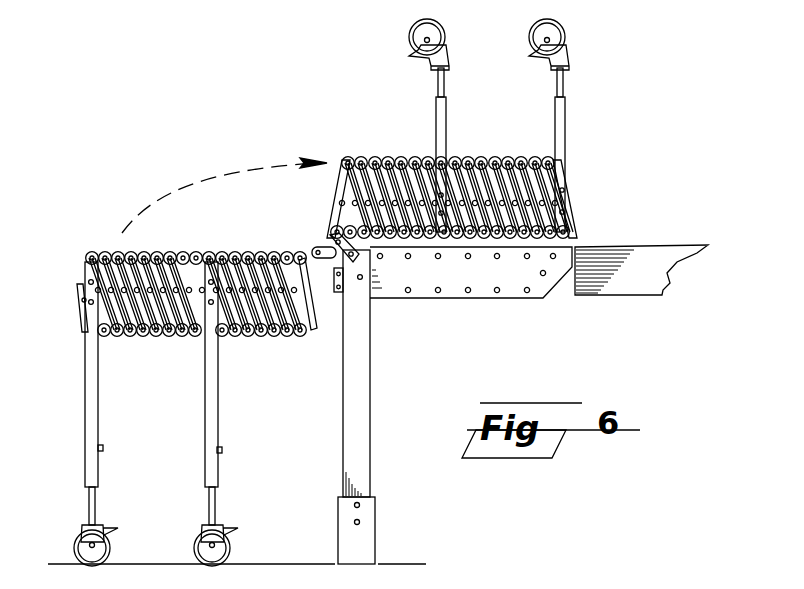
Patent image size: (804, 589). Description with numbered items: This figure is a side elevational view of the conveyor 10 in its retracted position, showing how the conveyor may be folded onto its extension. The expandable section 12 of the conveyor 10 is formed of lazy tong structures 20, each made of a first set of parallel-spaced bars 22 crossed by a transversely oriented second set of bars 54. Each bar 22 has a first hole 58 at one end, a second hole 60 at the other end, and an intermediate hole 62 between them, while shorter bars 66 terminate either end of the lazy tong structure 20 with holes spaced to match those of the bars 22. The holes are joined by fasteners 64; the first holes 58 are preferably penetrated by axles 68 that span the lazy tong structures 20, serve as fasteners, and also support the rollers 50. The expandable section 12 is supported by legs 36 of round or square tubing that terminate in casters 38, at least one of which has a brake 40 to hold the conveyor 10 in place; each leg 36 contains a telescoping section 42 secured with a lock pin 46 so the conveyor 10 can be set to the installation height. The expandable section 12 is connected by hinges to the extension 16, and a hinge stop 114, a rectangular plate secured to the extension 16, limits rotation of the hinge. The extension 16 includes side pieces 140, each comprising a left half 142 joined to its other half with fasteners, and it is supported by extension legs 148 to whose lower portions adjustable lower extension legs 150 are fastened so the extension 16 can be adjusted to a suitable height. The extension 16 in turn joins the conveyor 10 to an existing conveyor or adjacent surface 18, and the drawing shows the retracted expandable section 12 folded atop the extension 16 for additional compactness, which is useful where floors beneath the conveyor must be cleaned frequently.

The conveyor 10 is at (164, 337).
The expandable section 12 is at (128, 342).
The extension 16 is at (450, 302).
The existing conveyor or adjacent surface 18 is at (620, 298).
The lazy tong structure 20 is at (233, 334).
The bars 22 is at (270, 334).
The legs 36 is at (217, 398).
The casters 38 is at (229, 550).
The brake 40 is at (230, 530).
The telescoping section 42 is at (214, 502).
The lock pin 46 is at (222, 451).
The rollers 50 is at (225, 250).
The second set of bars 54 is at (178, 338).
The first hole 58 is at (182, 252).
The second hole 60 is at (109, 338).
The intermediate hole 62 is at (85, 278).
The fastener 64 is at (153, 338).
The shorter bars 66 is at (82, 292).
The axles 68 is at (181, 258).
The hinge stop 114 is at (337, 285).
The side pieces 140 is at (473, 292).
The left half 142 is at (536, 291).
The extension legs 148 is at (363, 382).
The lower extension legs 150 is at (360, 528).